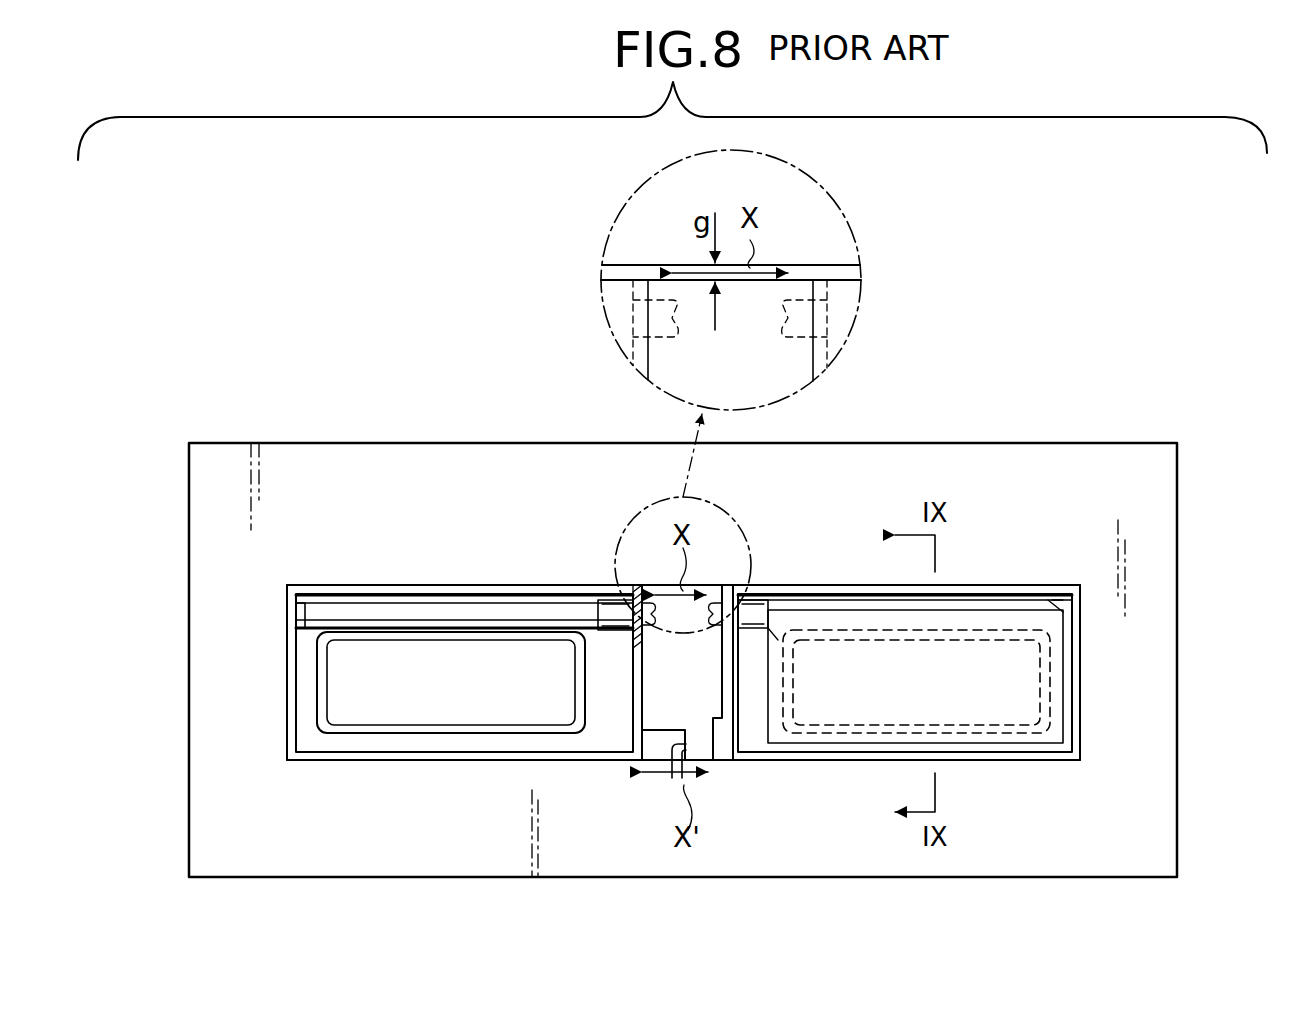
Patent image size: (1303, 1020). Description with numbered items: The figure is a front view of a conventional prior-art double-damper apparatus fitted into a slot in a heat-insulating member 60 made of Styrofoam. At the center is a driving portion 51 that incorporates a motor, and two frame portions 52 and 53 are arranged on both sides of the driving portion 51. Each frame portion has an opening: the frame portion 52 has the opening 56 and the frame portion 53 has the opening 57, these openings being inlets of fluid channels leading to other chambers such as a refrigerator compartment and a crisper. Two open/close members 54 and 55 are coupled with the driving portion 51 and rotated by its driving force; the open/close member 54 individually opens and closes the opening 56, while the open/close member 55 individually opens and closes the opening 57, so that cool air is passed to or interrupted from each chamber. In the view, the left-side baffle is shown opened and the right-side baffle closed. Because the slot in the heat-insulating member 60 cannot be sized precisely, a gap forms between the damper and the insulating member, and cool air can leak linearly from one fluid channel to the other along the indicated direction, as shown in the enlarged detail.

The heat-insulating member 60 is at (1168, 688).
The driving portion 51 is at (645, 715).
The frame portion 52 is at (1020, 570).
The frame portion 53 is at (333, 560).
The open/close member 54 is at (790, 607).
The open/close member 55 is at (455, 610).
The opening 56 is at (1000, 700).
The opening 57 is at (465, 710).